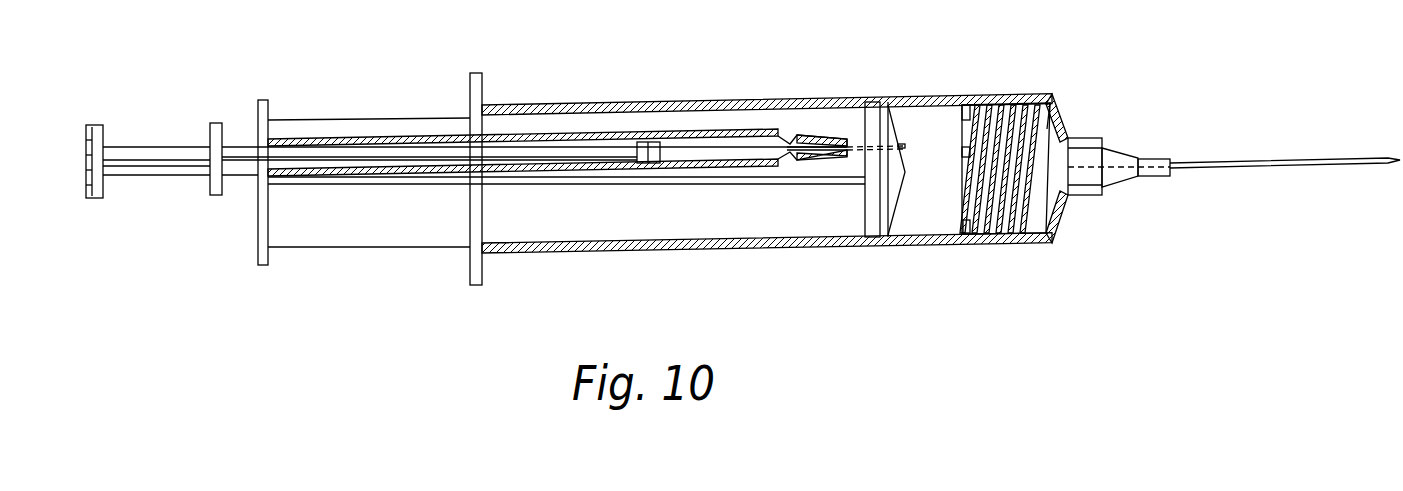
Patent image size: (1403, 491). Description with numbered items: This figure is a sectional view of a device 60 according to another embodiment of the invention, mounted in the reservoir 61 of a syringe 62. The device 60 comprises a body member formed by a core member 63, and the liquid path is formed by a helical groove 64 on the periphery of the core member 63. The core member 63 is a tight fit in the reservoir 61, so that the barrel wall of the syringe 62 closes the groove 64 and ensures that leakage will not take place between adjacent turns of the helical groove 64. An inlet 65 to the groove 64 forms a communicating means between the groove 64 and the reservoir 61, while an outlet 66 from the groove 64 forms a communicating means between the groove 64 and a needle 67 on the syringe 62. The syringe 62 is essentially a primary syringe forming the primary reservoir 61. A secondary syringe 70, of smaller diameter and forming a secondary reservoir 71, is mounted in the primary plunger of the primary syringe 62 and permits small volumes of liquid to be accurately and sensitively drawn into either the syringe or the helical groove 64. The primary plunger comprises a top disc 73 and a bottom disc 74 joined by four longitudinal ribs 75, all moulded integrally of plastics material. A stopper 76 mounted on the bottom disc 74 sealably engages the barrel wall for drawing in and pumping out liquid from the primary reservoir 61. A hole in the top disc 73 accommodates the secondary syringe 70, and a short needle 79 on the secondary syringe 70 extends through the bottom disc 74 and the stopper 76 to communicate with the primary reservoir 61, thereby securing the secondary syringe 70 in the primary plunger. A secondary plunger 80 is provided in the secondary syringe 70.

The device 60 is at (1015, 195).
The reservoir 61 is at (940, 215).
The syringe 62 is at (633, 250).
The core member 63 is at (1065, 217).
The helical groove 64 is at (1027, 105).
The inlet 65 is at (960, 133).
The outlet 66 is at (1058, 160).
The needle 67 is at (1248, 163).
The secondary syringe 70 is at (388, 142).
The secondary reservoir 71 is at (690, 150).
The top disc 73 is at (262, 242).
The bottom disc 74 is at (862, 118).
The longitudinal ribs 75 is at (355, 232).
The stopper 76 is at (896, 200).
The short needle 79 is at (908, 153).
The secondary plunger 80 is at (145, 150).